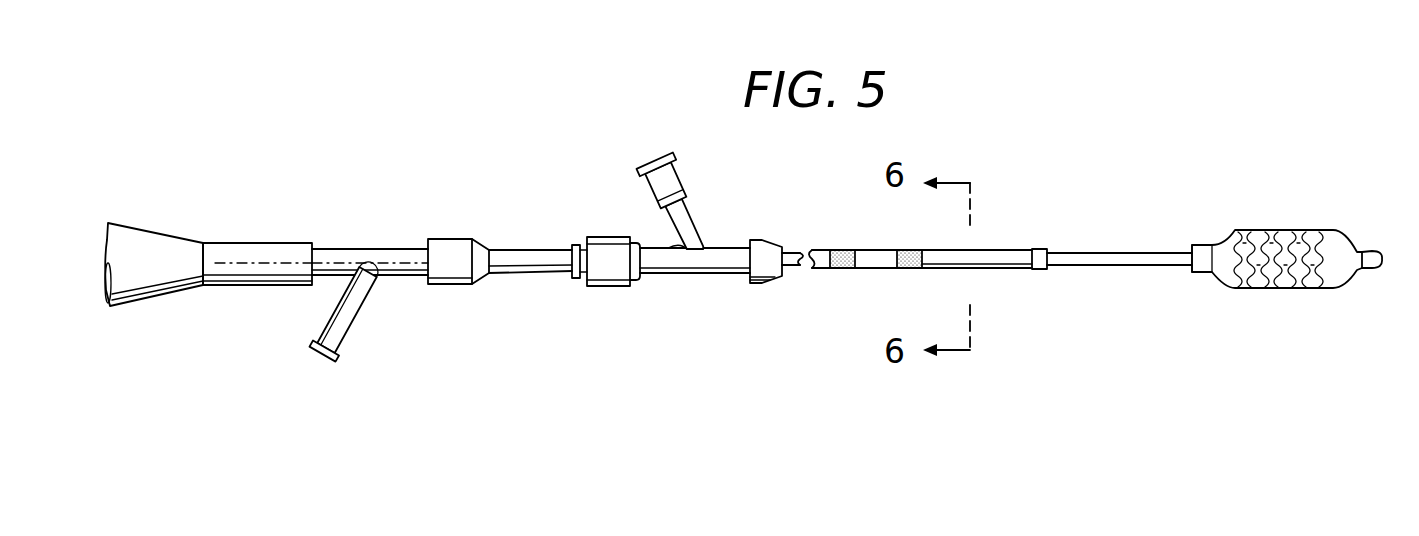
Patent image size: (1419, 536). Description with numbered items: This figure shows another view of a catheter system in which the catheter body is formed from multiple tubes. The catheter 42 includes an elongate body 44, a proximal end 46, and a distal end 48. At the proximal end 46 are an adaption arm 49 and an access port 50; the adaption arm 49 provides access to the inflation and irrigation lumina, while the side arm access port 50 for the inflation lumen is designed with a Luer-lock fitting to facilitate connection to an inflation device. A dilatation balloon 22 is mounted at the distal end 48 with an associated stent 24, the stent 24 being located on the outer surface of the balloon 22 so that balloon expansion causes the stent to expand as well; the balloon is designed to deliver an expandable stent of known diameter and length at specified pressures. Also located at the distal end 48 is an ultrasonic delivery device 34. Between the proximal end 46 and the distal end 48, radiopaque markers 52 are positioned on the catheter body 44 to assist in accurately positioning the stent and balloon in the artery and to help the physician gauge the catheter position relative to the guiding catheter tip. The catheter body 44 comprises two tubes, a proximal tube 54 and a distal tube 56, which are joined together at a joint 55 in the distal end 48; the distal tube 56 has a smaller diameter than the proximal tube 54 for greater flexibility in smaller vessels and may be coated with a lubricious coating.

The catheter 42 is at (761, 243).
The proximal end 46 is at (778, 150).
The distal end 48 is at (1392, 388).
The adaption arm 49 is at (703, 225).
The access port 50 is at (652, 172).
The elongate body 44 is at (872, 250).
The radiopaque markers 52 is at (918, 250).
The proximal tube 54 is at (983, 250).
The joint 55 is at (1037, 250).
The distal tube 56 is at (1078, 254).
The dilatation balloon 22 is at (1247, 232).
The stent 24 is at (1272, 290).
The ultrasonic delivery device 34 is at (1375, 252).